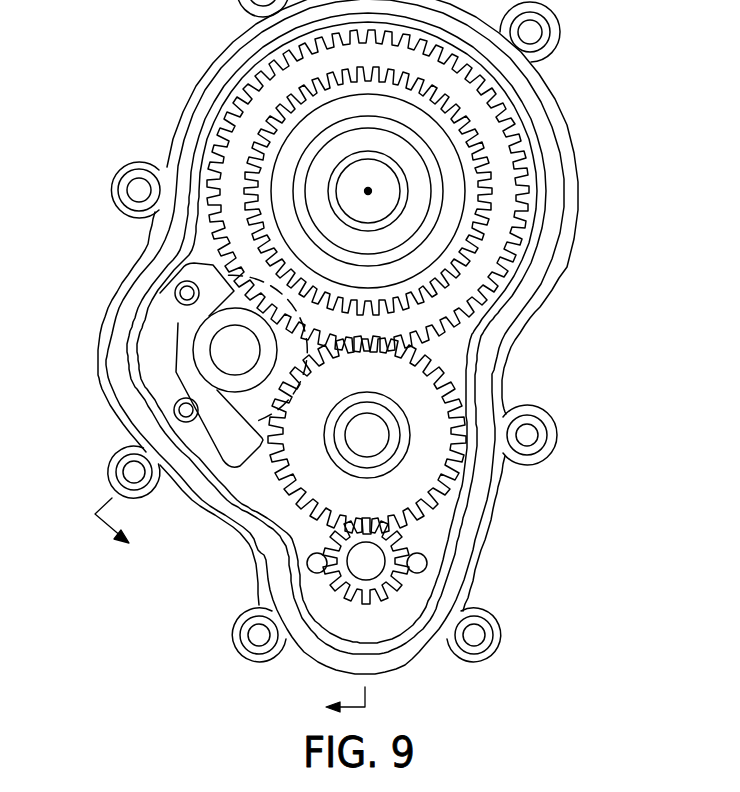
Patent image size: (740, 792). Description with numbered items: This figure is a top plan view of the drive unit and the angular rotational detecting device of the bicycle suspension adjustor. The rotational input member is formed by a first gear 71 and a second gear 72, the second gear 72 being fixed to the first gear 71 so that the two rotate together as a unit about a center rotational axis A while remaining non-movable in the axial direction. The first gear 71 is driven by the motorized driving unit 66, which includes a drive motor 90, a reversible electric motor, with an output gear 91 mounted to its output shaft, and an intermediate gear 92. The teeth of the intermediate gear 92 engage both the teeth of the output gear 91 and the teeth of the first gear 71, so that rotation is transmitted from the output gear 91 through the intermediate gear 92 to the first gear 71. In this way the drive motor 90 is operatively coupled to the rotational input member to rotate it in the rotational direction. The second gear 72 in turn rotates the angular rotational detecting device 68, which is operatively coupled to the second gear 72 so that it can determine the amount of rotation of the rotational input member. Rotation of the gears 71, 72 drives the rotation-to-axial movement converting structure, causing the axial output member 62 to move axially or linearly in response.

The axial output member 62 is at (438, 191).
The first gear 71 is at (523, 223).
The second gear 72 is at (490, 162).
The center rotational axis A is at (368, 191).
The intermediate gear 92 is at (442, 362).
The output gear 91 is at (410, 542).
The drive motor 90 is at (417, 561).
The angular rotational detecting device 68 is at (158, 372).
The motorized driving unit 66 is at (285, 527).